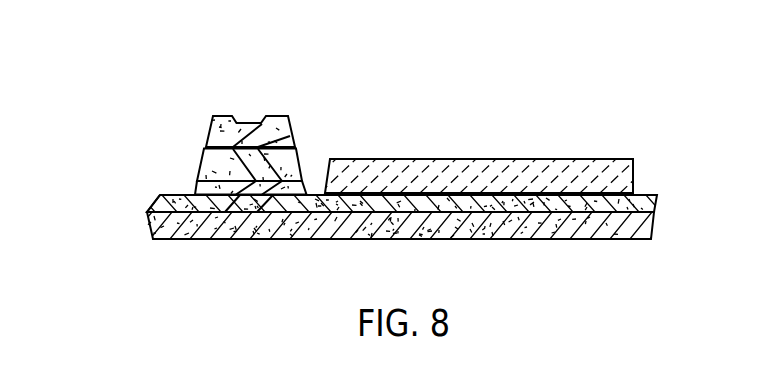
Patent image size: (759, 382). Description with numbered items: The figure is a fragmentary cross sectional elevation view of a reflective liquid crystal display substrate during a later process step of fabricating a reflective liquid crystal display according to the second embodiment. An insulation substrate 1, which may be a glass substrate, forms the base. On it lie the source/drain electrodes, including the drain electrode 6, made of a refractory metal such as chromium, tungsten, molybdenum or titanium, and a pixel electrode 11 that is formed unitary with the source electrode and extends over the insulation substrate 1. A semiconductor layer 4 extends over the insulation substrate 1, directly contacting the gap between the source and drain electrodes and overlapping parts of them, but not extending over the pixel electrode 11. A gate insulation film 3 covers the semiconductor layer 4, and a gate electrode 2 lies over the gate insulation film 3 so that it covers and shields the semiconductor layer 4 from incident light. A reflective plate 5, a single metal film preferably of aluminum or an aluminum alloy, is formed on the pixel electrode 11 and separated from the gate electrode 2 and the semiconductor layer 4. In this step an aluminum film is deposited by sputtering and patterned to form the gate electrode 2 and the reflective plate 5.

The insulation substrate 1 is at (642, 232).
The pixel electrode 11 is at (661, 195).
The reflective plate 5 is at (602, 163).
The gate electrode 2 is at (223, 116).
The gate insulation film 3 is at (300, 168).
The semiconductor layer 4 is at (195, 192).
The drain electrode 6 is at (160, 196).